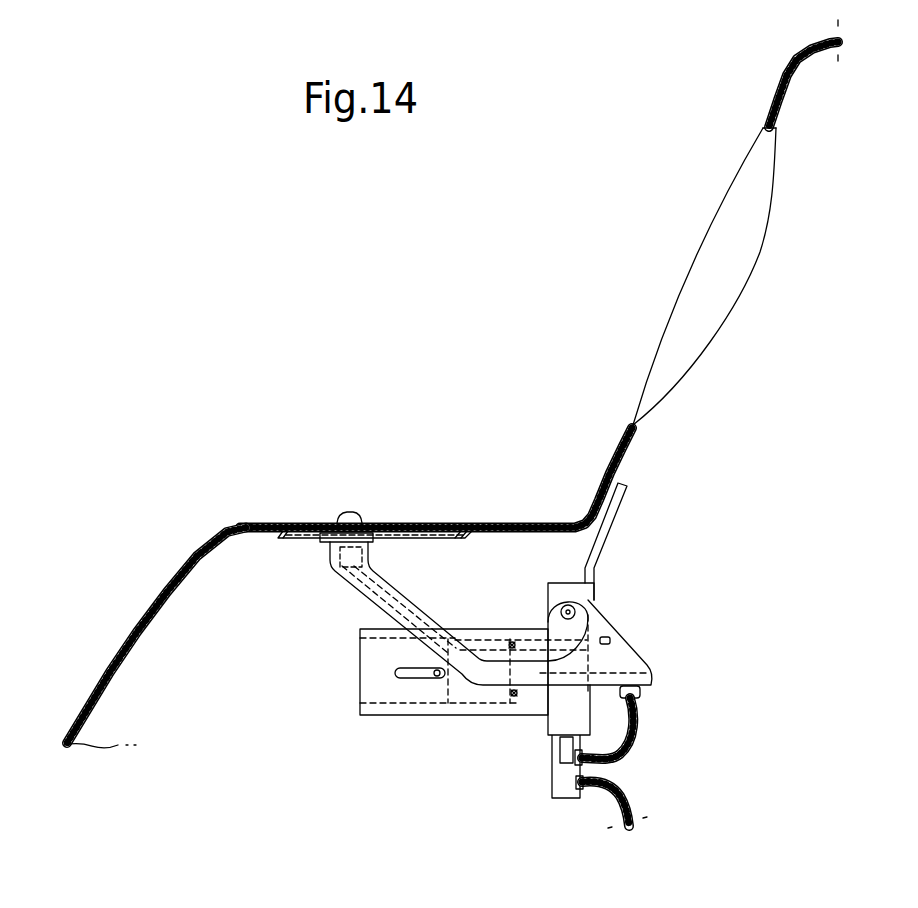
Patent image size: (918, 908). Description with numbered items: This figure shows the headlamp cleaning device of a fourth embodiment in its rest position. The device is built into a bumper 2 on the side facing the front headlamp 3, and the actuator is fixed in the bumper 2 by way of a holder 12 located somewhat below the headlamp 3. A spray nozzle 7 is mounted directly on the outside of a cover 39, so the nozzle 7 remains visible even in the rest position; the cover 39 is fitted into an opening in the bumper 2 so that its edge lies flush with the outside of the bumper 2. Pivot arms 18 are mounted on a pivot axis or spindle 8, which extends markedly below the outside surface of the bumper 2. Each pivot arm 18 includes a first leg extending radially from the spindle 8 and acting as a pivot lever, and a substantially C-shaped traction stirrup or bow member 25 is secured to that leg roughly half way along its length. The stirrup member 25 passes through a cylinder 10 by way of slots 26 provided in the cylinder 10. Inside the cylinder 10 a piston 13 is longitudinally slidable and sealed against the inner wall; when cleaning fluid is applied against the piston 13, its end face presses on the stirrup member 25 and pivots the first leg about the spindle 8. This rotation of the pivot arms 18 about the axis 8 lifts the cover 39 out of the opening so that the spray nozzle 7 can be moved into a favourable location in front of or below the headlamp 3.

The bumper 2 is at (193, 560).
The front headlamp 3 is at (688, 278).
The spray nozzle 7 is at (343, 512).
The cover 39 is at (420, 523).
The holder 12 is at (607, 522).
The pivot axis or spindle 8 is at (573, 609).
The traction stirrup or bow member 25 is at (607, 639).
The pivot arms 18 is at (367, 598).
The cylinder 10 is at (362, 735).
The slots 26 is at (421, 680).
The piston 13 is at (462, 688).